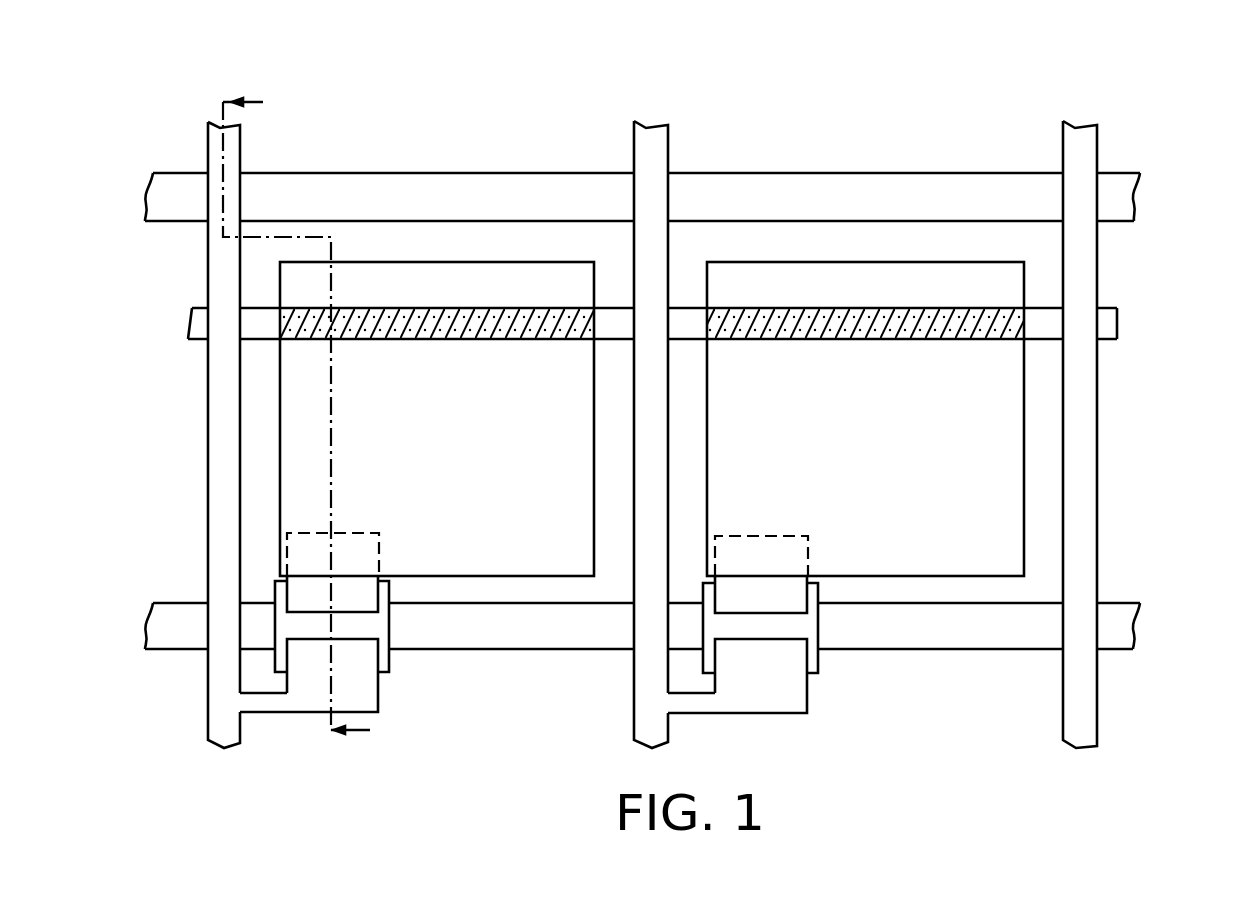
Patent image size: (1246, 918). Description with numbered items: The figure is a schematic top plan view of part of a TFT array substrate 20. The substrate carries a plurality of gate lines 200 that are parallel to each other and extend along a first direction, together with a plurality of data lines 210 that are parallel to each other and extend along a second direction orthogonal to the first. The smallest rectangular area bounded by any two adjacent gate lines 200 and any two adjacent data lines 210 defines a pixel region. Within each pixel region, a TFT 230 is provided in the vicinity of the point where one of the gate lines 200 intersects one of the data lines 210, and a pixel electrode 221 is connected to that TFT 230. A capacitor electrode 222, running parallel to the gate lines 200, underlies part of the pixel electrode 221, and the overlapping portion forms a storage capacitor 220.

The TFT array substrate 20 is at (618, 60).
The gate lines 200 is at (1113, 198).
The data lines 210 is at (1082, 153).
The storage capacitor 220 is at (990, 317).
The pixel electrode 221 is at (958, 442).
The capacitor electrode 222 is at (1108, 325).
The TFT 230 is at (813, 655).